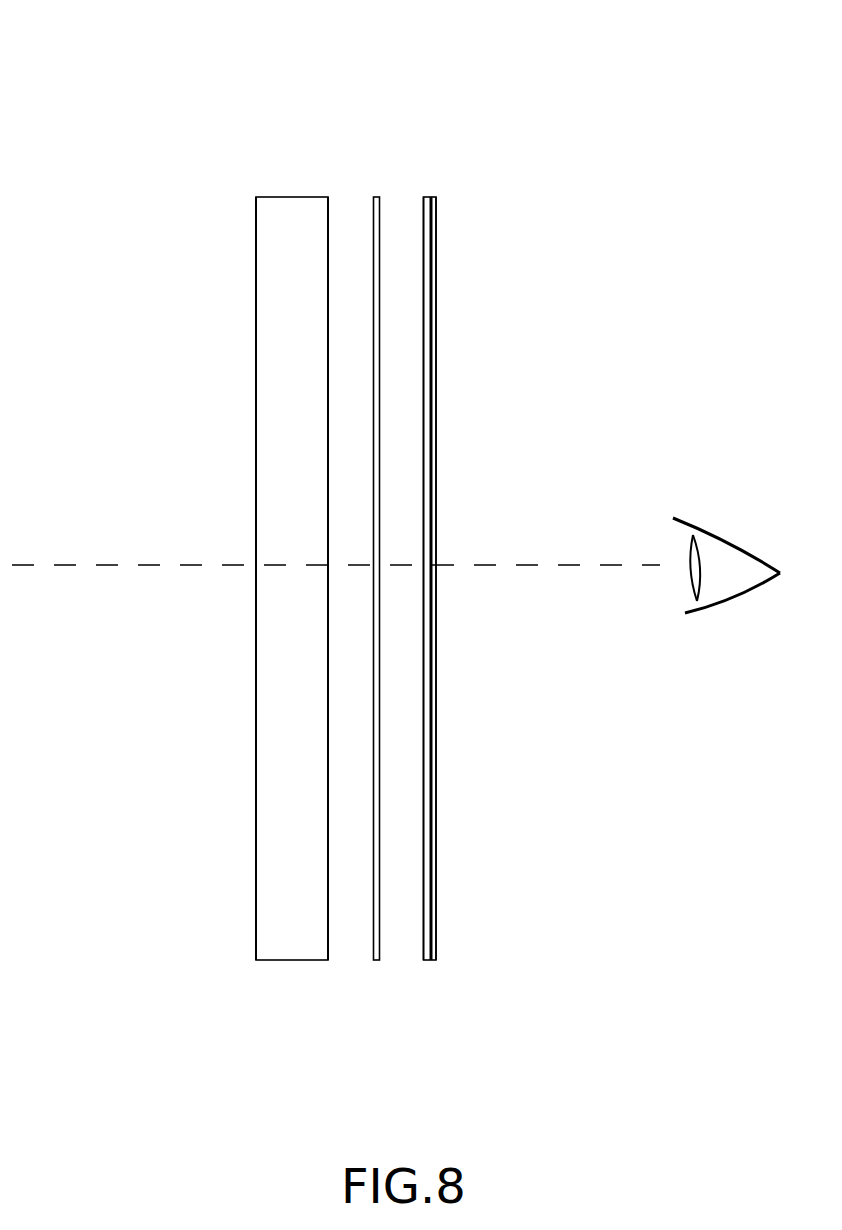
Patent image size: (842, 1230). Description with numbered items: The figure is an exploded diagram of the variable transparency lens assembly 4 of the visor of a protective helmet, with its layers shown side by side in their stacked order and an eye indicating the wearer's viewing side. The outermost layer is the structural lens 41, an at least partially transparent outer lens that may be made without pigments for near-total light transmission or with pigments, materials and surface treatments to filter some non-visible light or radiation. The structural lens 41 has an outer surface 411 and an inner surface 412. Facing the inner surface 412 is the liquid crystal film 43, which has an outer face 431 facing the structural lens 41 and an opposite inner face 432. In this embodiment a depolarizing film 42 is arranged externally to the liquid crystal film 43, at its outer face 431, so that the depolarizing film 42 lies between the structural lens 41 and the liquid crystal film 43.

The lens assembly 4 is at (360, 549).
The structural lens 41 is at (206, 487).
The outer surface 411 is at (255, 320).
The inner surface 412 is at (329, 269).
The depolarizing film 42 is at (381, 904).
The liquid crystal film 43 is at (534, 576).
The outer face 431 is at (421, 468).
The inner face 432 is at (438, 309).